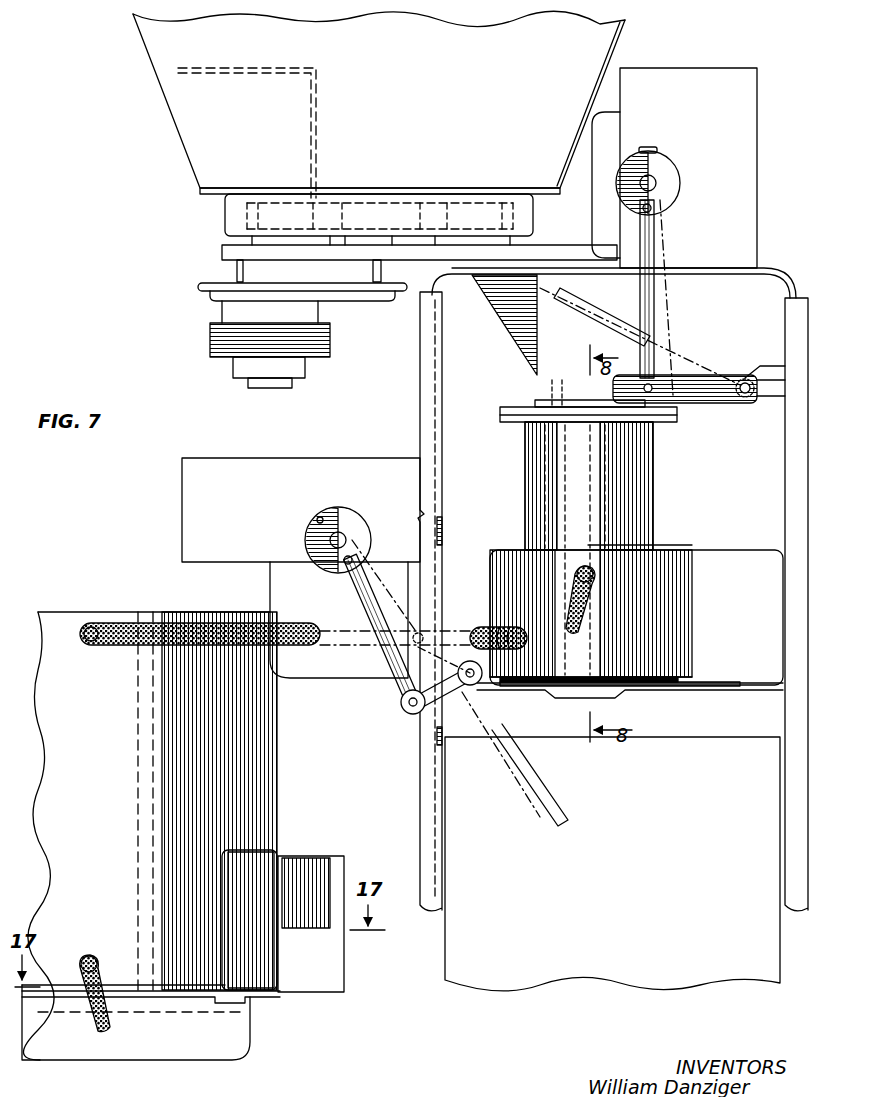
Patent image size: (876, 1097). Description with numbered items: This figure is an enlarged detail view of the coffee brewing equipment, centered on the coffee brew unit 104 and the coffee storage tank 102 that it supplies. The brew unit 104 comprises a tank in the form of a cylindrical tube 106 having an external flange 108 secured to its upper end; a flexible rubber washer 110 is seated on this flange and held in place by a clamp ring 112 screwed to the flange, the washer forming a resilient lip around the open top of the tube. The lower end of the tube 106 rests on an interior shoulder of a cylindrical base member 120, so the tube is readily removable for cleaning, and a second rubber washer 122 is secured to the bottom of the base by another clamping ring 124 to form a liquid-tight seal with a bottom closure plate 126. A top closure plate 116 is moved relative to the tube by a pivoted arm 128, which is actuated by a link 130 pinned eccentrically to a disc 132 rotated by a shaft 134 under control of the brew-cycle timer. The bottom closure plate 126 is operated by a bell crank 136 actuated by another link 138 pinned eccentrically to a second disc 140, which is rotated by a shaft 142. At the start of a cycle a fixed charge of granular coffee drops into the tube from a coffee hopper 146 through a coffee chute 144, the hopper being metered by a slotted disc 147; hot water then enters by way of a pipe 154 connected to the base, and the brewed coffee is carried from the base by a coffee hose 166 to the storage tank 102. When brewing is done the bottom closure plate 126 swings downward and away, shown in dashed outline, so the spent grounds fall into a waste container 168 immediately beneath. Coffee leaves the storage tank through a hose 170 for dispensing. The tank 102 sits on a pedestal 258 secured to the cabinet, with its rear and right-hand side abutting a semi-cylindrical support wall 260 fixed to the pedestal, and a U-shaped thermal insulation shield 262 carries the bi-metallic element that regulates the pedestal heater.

The coffee storage tank 102 is at (100, 759).
The coffee brew unit 104 is at (495, 485).
The cylindrical tube 106 is at (625, 469).
The external flange 108 is at (502, 420).
The flexible rubber washer 110 is at (500, 413).
The clamp ring 112 is at (518, 407).
The top closure plate 116 is at (573, 303).
The cylindrical base member 120 is at (668, 607).
The second rubber washer 122 is at (552, 677).
The clamping ring 124 is at (680, 681).
The bottom closure plate 126 is at (580, 691).
The pivoted arm 128 is at (686, 395).
The link 130 is at (650, 239).
The disc 132 is at (660, 166).
The shaft 134 is at (657, 183).
The bell crank 136 is at (492, 690).
The link 138 is at (393, 592).
The second disc 140 is at (345, 520).
The shaft 142 is at (352, 536).
The coffee chute 144 is at (512, 303).
The coffee hopper 146 is at (200, 133).
The slotted disc 147 is at (388, 213).
The pipe 154 is at (577, 612).
The coffee hose 166 is at (135, 640).
The waste container 168 is at (570, 960).
The hose 170 is at (97, 1010).
The pedestal 258 is at (185, 1050).
The semi-cylindrical support wall 260 is at (248, 872).
The U-shaped thermal insulation shield 262 is at (328, 890).